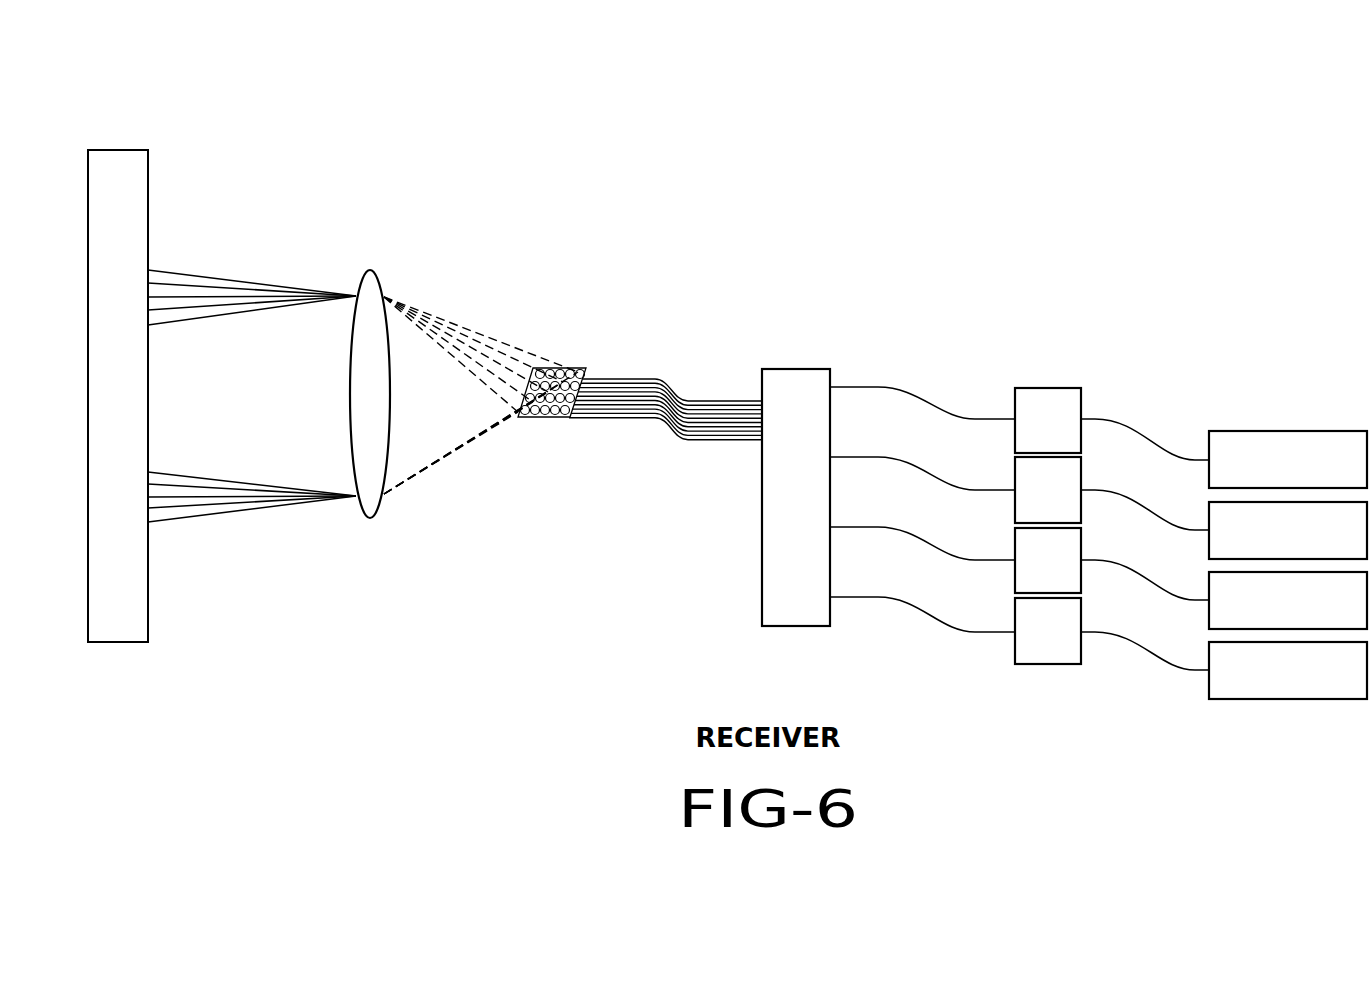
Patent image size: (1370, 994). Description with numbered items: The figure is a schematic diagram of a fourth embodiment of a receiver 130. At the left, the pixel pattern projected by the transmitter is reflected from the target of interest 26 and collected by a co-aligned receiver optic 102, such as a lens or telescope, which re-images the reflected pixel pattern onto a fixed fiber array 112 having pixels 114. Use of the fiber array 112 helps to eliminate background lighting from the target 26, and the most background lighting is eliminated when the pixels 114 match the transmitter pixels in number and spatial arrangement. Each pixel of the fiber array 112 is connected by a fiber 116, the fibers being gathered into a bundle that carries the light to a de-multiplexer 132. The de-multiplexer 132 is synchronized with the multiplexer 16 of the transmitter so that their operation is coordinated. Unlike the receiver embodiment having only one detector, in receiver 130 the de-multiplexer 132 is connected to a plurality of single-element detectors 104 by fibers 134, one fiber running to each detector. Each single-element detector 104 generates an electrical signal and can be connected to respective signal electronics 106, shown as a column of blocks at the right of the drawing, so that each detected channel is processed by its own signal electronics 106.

The target of interest 26 is at (136, 413).
The receiver optic 102 is at (398, 266).
The fiber array 112 is at (577, 350).
The pixels 114 is at (556, 372).
The fiber 116 is at (652, 421).
The receiver 130 is at (1028, 154).
The multiplexer 16 is at (796, 368).
The de-multiplexer 132 is at (822, 515).
The fibers 134 is at (855, 387).
The single-element detector 104 is at (1072, 434).
The signal electronics 106 is at (1313, 474).